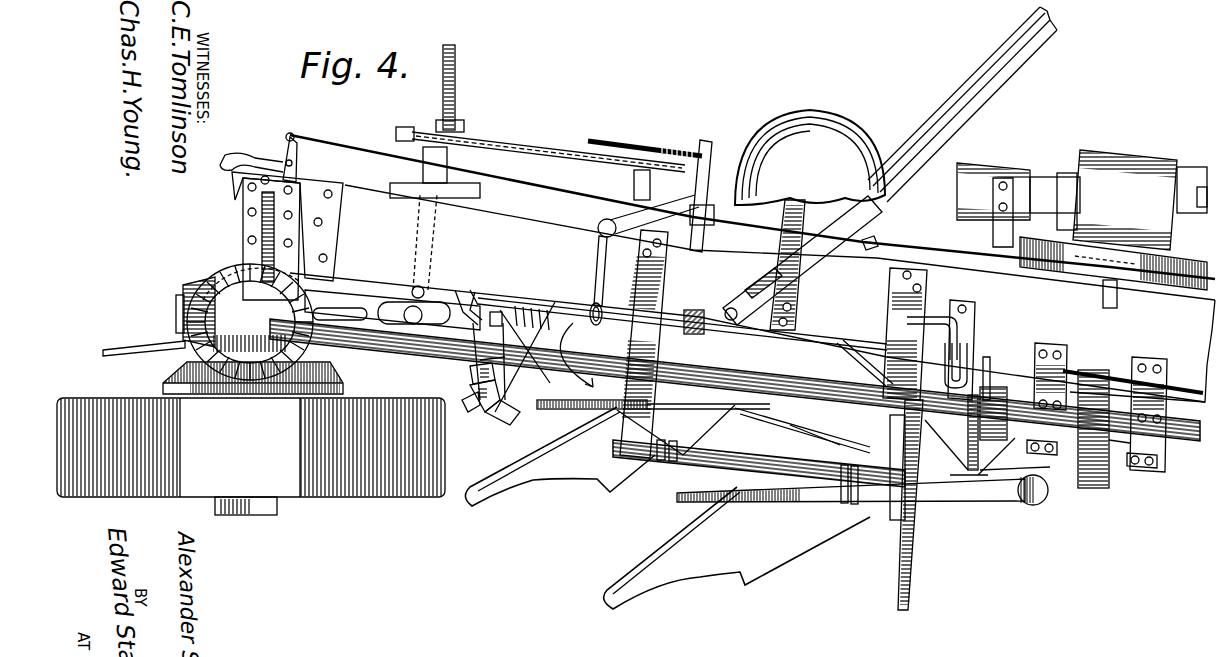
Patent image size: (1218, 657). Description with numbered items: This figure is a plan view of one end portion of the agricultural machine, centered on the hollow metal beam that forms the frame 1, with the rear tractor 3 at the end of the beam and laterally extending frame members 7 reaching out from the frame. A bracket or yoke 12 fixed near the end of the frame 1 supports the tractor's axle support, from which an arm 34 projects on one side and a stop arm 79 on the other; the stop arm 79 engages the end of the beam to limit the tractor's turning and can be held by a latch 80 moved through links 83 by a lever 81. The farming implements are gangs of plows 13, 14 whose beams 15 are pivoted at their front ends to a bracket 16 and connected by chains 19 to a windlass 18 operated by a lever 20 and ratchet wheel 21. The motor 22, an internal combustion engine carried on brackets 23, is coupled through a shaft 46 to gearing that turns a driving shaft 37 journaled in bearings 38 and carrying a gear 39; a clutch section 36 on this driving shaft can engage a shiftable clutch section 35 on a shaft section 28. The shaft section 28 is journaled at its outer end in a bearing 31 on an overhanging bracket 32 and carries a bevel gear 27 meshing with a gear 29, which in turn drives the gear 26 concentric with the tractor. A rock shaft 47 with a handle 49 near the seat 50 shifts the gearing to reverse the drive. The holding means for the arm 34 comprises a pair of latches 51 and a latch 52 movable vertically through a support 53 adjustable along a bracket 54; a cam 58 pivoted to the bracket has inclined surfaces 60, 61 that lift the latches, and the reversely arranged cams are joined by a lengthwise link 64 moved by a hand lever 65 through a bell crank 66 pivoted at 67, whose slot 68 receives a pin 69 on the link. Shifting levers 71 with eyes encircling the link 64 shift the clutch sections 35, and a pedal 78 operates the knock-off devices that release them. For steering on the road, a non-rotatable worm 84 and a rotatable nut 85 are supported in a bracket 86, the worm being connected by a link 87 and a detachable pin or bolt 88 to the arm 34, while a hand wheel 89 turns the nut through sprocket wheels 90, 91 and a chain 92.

The frame 1 is at (455, 250).
The tractor 3 is at (251, 456).
The laterally extending frame members 7 is at (1022, 70).
The bracket or yoke 12 is at (332, 232).
The gang of plows 13 is at (628, 558).
The gang of plows 14 is at (970, 435).
The plow beams 15 is at (805, 445).
The bracket 16 is at (1040, 460).
The windlass 18 is at (762, 465).
The chains 19 is at (666, 462).
The lever 20 is at (910, 586).
The ratchet wheel 21 is at (912, 470).
The motor 22 is at (1118, 180).
The brackets 23 is at (994, 232).
The gear 26 is at (166, 378).
The bevel gear 27 is at (184, 298).
The shaft section 28 is at (428, 345).
The gear 29 is at (310, 352).
The bearing 31 is at (238, 312).
The overhanging bracket 32 is at (246, 222).
The arm 34 is at (372, 318).
The shiftable clutch section 35 is at (908, 334).
The clutch section 36 is at (1005, 395).
The driving shaft 37 is at (1112, 446).
The bearings 38 is at (1150, 465).
The gear 39 is at (1091, 490).
The shaft 46 is at (1117, 308).
The rock shaft 47 is at (970, 352).
The handle 49 is at (940, 318).
The seat 50 is at (804, 220).
The latches 51 is at (478, 405).
The latch 52 is at (500, 310).
The support 53 is at (476, 414).
The bracket 54 is at (522, 372).
The cam 58 is at (468, 374).
The inclined surface 60 is at (510, 420).
The inclined surface 61 is at (465, 298).
The link 64 is at (548, 305).
The hand lever 65 is at (702, 245).
The bell crank 66 is at (612, 218).
The pivot 67 is at (610, 240).
The slot 68 is at (602, 312).
The pin 69 is at (576, 355).
The shifting lever 71 is at (992, 365).
The pedal 78 is at (694, 336).
The stop arm 79 is at (150, 348).
The latch 80 is at (238, 154).
The lever 81 is at (864, 250).
The links 83 is at (356, 146).
The worm 84 is at (458, 63).
The nut 85 is at (455, 130).
The bracket 86 is at (422, 170).
The link 87 is at (418, 268).
The pin or bolt 88 is at (408, 308).
The hand wheel 89 is at (614, 140).
The sprocket wheel 90 is at (632, 174).
The sprocket wheel 91 is at (399, 131).
The sprocket chain 92 is at (525, 148).